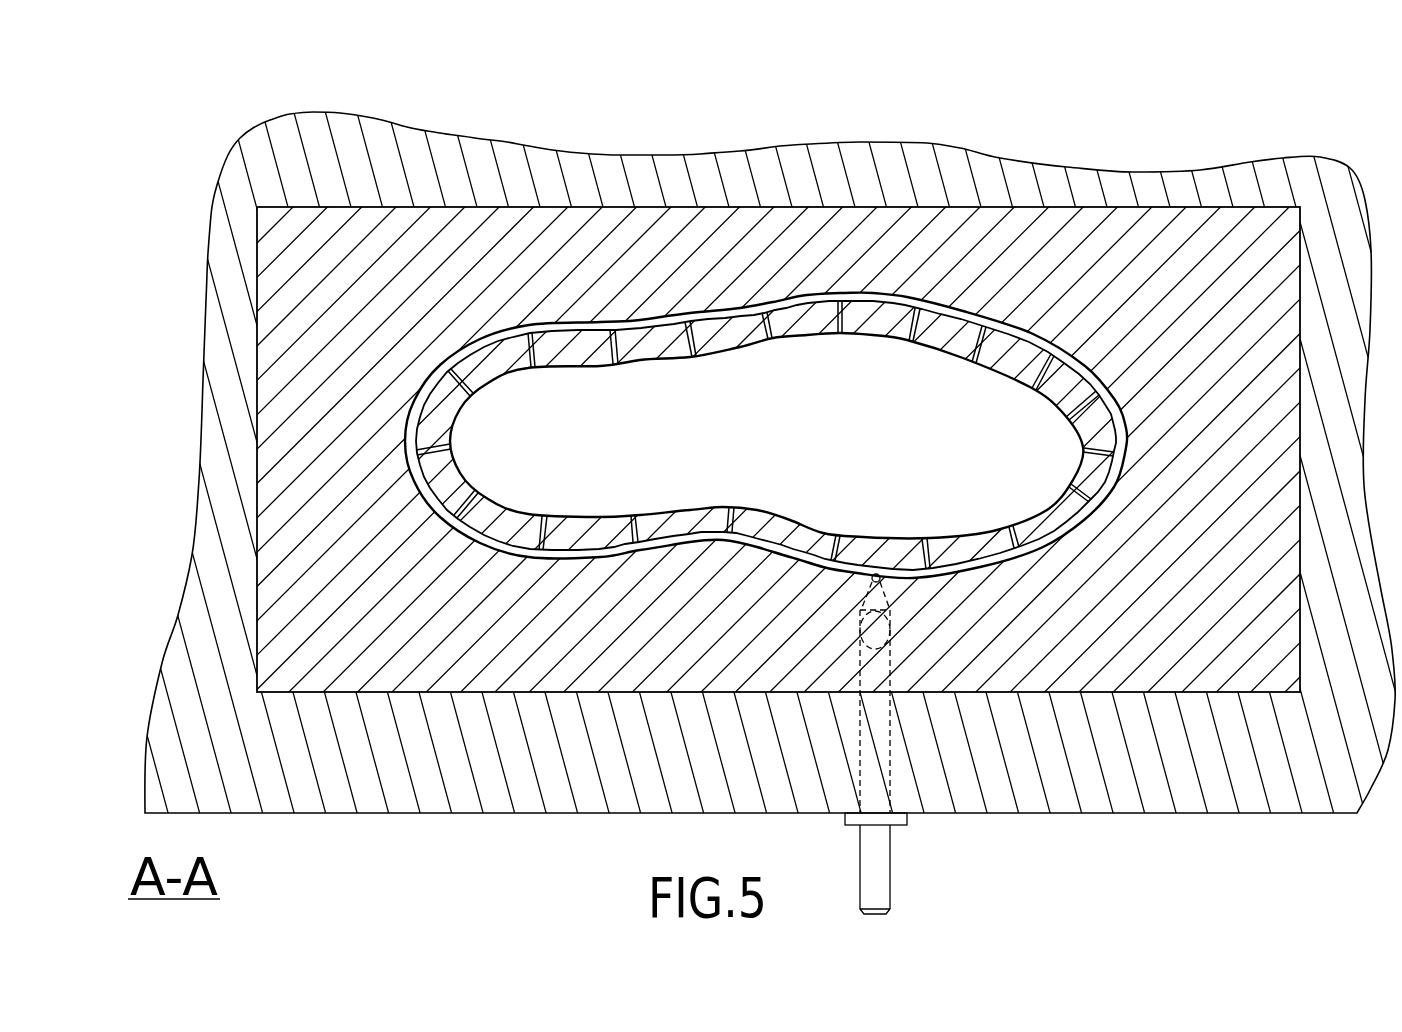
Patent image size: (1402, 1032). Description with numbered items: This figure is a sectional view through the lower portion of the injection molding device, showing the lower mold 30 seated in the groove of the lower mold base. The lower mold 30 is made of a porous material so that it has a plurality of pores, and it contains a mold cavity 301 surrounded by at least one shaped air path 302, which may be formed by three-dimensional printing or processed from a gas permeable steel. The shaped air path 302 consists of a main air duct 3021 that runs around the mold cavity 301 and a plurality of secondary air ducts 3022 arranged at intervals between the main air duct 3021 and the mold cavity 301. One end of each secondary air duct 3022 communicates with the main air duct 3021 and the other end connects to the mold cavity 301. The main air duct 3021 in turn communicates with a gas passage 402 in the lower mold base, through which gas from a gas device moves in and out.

The lower mold 30 is at (333, 600).
The mold cavity 301 is at (495, 428).
The shaped air path 302 is at (766, 295).
The main air duct 3021 is at (628, 325).
The secondary air ducts 3022 is at (753, 303).
The gas passage 402 is at (893, 893).